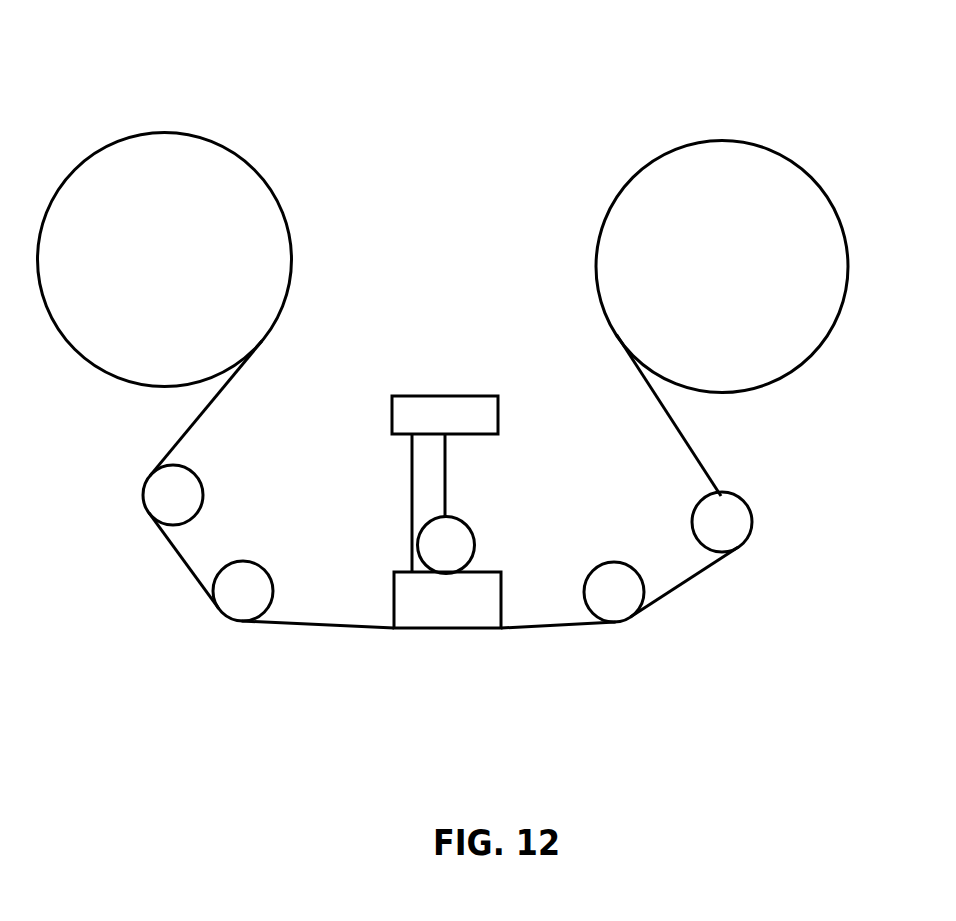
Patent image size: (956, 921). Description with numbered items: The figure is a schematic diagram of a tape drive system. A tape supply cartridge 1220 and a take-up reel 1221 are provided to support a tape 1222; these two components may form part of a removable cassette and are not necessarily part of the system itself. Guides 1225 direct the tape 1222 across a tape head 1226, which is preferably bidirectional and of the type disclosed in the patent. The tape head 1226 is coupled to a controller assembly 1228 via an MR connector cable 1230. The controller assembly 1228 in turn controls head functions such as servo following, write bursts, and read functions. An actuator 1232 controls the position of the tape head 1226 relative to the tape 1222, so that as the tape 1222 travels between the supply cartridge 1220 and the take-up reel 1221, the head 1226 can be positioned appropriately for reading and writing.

The tape supply cartridge 1220 is at (164, 131).
The take-up reel 1221 is at (722, 141).
The tape 1222 is at (320, 627).
The guides 1225 is at (205, 487).
The tape head 1226 is at (503, 598).
The controller assembly 1228 is at (443, 395).
The MR connector cable 1230 is at (407, 543).
The actuator 1232 is at (467, 527).